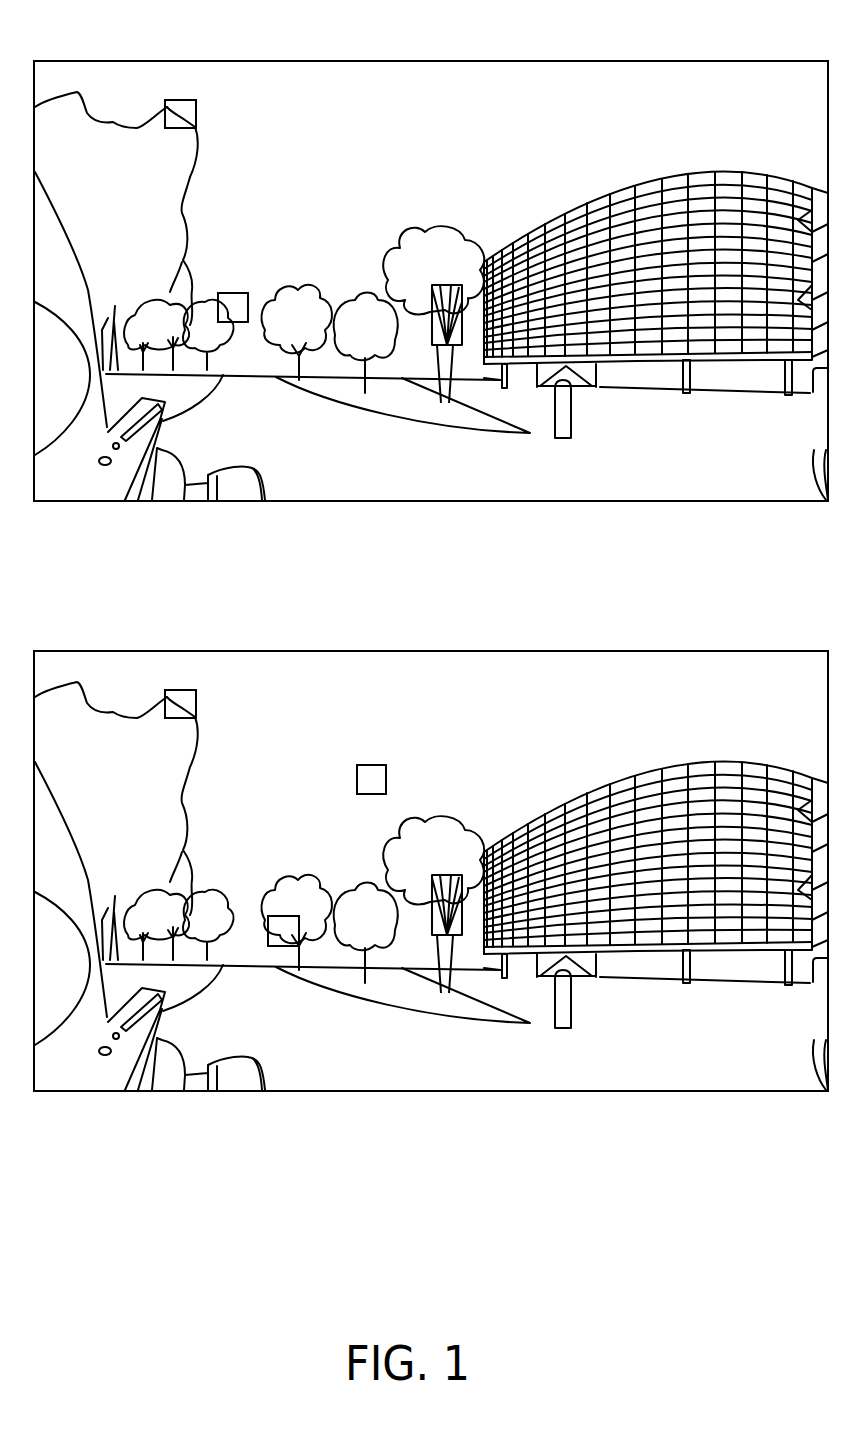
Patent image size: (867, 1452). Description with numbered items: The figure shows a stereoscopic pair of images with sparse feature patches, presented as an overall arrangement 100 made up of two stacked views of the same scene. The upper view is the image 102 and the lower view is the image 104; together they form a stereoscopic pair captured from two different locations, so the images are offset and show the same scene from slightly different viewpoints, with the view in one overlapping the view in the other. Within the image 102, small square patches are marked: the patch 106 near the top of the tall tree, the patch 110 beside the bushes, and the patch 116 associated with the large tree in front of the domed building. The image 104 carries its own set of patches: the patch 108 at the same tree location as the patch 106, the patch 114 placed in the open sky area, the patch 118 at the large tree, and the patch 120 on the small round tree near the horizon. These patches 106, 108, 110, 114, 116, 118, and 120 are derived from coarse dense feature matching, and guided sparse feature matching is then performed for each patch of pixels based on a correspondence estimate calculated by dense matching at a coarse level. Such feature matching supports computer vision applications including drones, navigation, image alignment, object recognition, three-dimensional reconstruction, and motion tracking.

The scene capture and annotation example 100 is at (431, 669).
The image 102 is at (431, 290).
The image 104 is at (431, 885).
The patch 106 is at (183, 100).
The patch 108 is at (183, 690).
The patch 110 is at (236, 293).
The patch 114 is at (365, 765).
The patch 116 is at (437, 315).
The patch 118 is at (438, 905).
The patch 120 is at (285, 916).